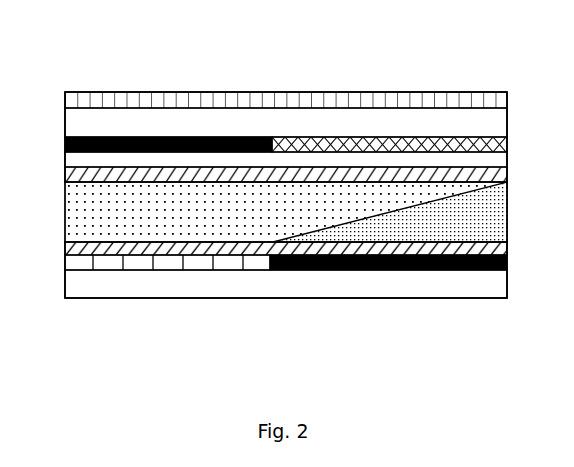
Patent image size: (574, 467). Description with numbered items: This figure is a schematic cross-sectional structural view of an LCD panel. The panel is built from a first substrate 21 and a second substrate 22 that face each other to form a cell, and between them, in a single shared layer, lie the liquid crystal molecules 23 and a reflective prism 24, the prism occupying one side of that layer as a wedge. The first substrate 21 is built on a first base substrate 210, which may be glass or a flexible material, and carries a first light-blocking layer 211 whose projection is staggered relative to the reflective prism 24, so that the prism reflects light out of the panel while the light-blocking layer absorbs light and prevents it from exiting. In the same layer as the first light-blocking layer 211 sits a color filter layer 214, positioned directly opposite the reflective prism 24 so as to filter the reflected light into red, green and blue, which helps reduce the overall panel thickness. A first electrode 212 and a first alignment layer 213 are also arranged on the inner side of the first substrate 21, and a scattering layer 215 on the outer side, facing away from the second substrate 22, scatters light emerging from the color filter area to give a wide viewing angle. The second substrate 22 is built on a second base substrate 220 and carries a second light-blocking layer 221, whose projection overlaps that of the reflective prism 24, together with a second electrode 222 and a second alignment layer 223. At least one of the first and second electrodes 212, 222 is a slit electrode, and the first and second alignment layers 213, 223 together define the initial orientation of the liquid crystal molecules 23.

The first substrate 21 is at (452, 46).
The first base substrate 210 is at (437, 122).
The first light-blocking layer 211 is at (256, 140).
The first electrode 212 is at (190, 160).
The first alignment layer 213 is at (130, 175).
The color filter layer 214 is at (316, 145).
The scattering layer 215 is at (384, 100).
The second substrate 22 is at (212, 360).
The second base substrate 220 is at (378, 285).
The second light-blocking layer 221 is at (317, 265).
The second electrode 222 is at (258, 263).
The second alignment layer 223 is at (190, 250).
The liquid crystal molecules 23 is at (88, 212).
The reflective prism 24 is at (483, 212).